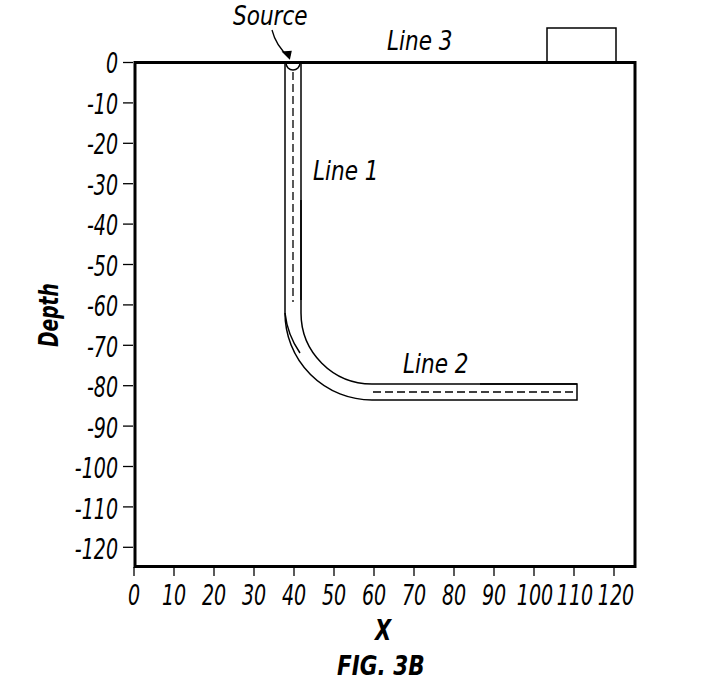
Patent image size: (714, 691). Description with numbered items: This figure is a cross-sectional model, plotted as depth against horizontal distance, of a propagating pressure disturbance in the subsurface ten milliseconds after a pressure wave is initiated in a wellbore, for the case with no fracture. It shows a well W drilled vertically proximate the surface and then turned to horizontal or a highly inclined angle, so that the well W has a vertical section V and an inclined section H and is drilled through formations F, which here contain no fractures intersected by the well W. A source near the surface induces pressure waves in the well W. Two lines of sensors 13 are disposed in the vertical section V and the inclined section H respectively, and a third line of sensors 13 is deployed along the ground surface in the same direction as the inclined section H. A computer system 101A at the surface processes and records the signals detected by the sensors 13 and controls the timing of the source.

The sensors 13 is at (290, 130).
The computer system 101A is at (582, 50).
The vertical section V is at (302, 250).
The well W is at (292, 345).
The inclined section H is at (518, 381).
The formations F is at (389, 281).